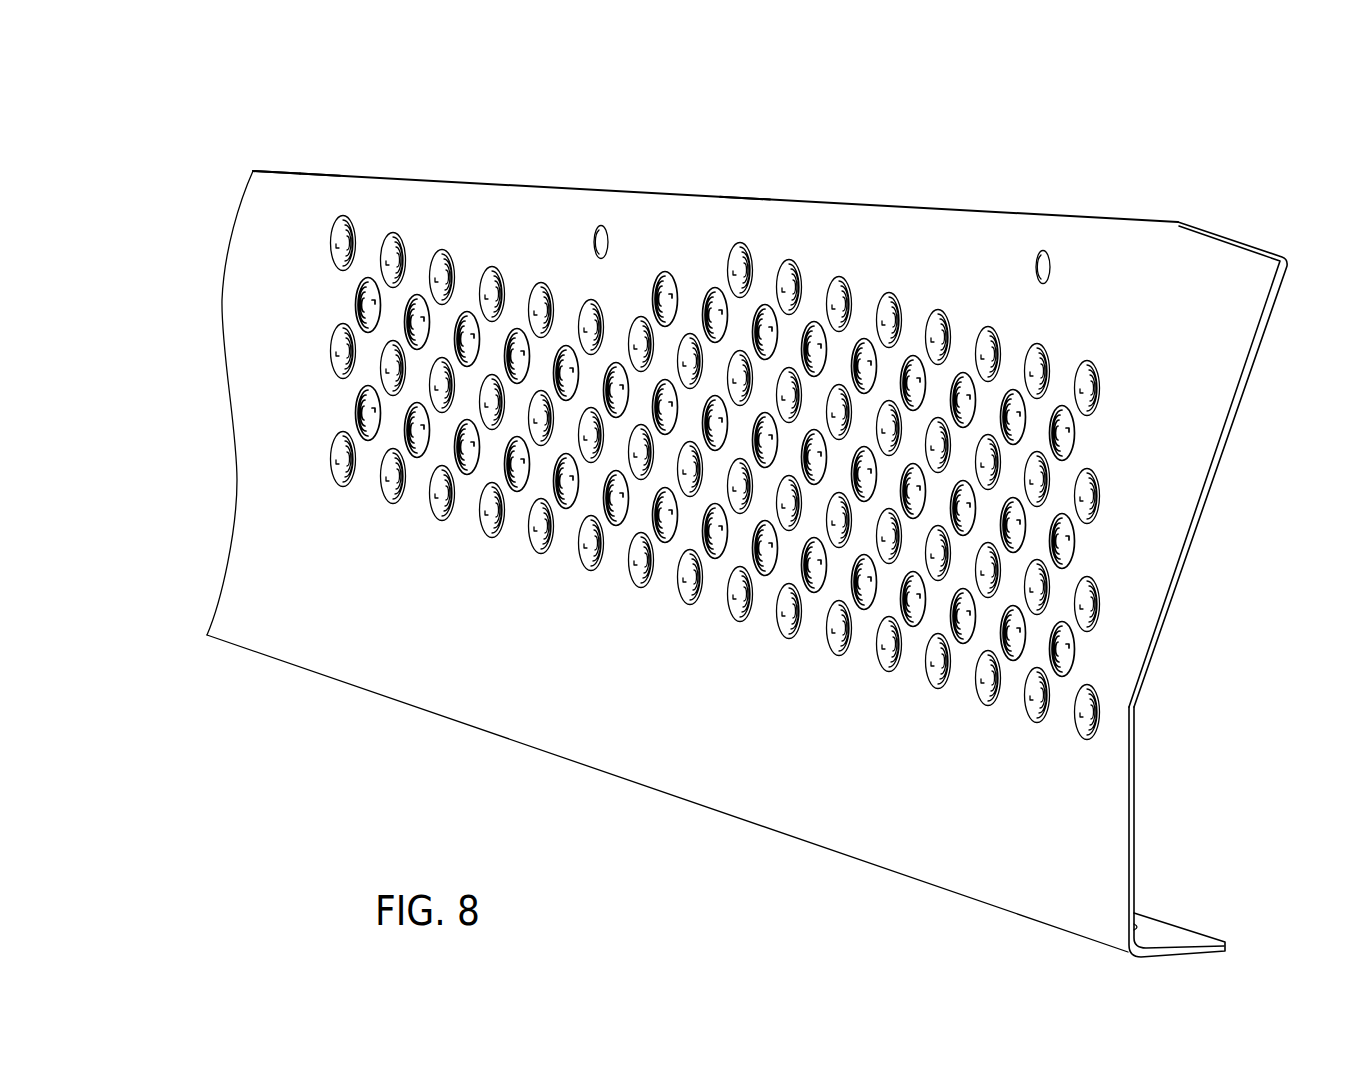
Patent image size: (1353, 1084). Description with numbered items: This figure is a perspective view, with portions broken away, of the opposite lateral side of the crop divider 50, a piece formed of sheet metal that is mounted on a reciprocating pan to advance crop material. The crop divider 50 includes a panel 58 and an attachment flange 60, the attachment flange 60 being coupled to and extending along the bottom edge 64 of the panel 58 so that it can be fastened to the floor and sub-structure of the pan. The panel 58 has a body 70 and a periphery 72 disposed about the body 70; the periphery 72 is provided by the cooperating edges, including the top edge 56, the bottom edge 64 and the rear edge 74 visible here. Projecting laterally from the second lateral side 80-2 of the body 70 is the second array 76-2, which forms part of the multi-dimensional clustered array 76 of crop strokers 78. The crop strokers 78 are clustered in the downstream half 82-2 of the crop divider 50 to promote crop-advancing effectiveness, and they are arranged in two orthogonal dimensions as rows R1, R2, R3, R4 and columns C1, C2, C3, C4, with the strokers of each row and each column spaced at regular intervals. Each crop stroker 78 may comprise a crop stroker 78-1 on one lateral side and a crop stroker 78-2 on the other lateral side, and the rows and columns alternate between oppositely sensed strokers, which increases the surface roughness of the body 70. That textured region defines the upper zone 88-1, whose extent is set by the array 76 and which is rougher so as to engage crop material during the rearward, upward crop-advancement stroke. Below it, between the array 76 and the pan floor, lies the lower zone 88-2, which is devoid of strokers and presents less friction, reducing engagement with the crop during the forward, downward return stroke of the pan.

The crop divider 50 is at (1005, 93).
The top edge 56 is at (638, 190).
The panel 58 is at (277, 190).
The attachment flange 60 is at (1180, 940).
The bottom edge 64 is at (1107, 947).
The body 70 is at (281, 180).
The periphery 72 is at (317, 172).
The rear edge 74 is at (1196, 548).
The clustered array 76 is at (957, 258).
The second array 76-2 is at (883, 243).
The crop strokers 78 is at (1073, 663).
The crop stroker 78-1 is at (1032, 722).
The crop stroker 78-2 is at (864, 610).
The second lateral side 80-2 is at (252, 298).
The downstream half 82-2 is at (743, 210).
The upper zone 88-1 is at (1100, 438).
The lower zone 88-2 is at (1057, 777).
The column C1 is at (343, 205).
The column C2 is at (367, 265).
The column C3 is at (393, 225).
The column C4 is at (417, 285).
The row R1 is at (327, 452).
The row R2 is at (345, 405).
The row R3 is at (320, 343).
The row R4 is at (345, 295).